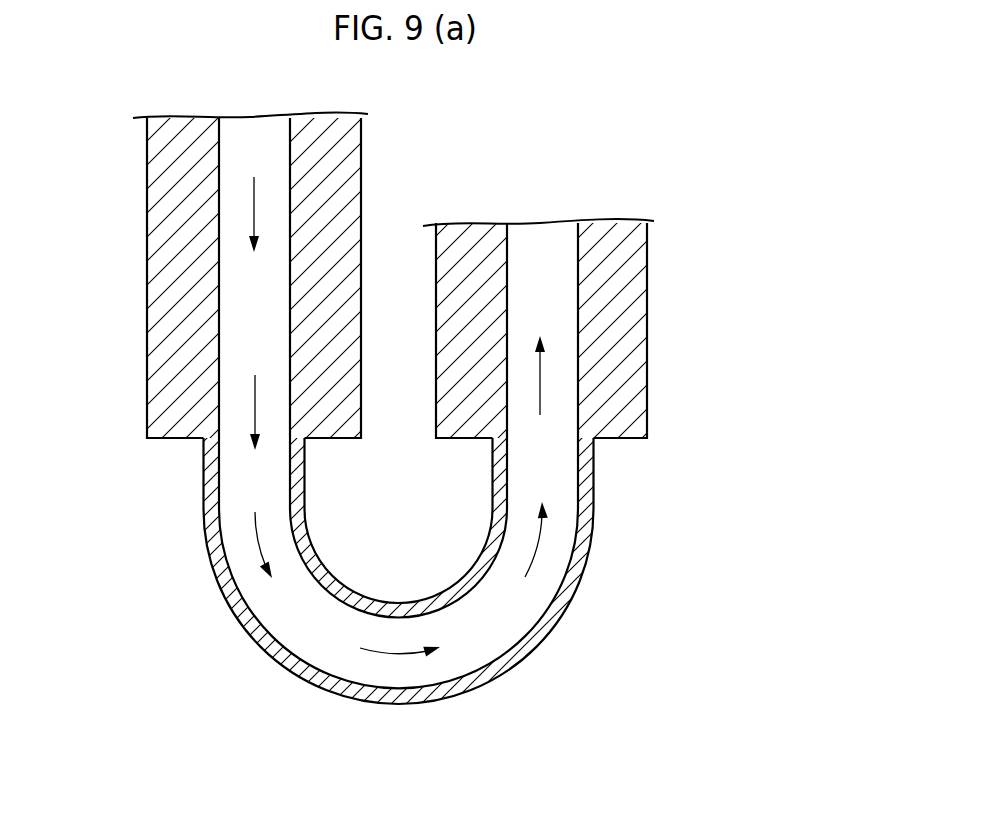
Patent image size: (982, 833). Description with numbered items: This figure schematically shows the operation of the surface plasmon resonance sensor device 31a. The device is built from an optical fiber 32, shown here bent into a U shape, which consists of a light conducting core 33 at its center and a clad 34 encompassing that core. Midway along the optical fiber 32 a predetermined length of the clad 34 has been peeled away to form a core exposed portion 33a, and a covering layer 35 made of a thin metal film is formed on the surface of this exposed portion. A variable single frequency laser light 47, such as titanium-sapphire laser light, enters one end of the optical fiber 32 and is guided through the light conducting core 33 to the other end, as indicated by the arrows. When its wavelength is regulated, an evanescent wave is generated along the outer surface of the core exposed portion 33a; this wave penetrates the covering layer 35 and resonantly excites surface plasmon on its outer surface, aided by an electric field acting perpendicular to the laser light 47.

The surface plasmon resonance sensor device 31a is at (578, 88).
The optical fiber 32 is at (210, 275).
The light conducting core 33 is at (254, 140).
The core exposed portion 33a is at (523, 621).
The clad 34 is at (147, 188).
The covering layer 35 is at (402, 703).
The laser light 47 is at (255, 205).